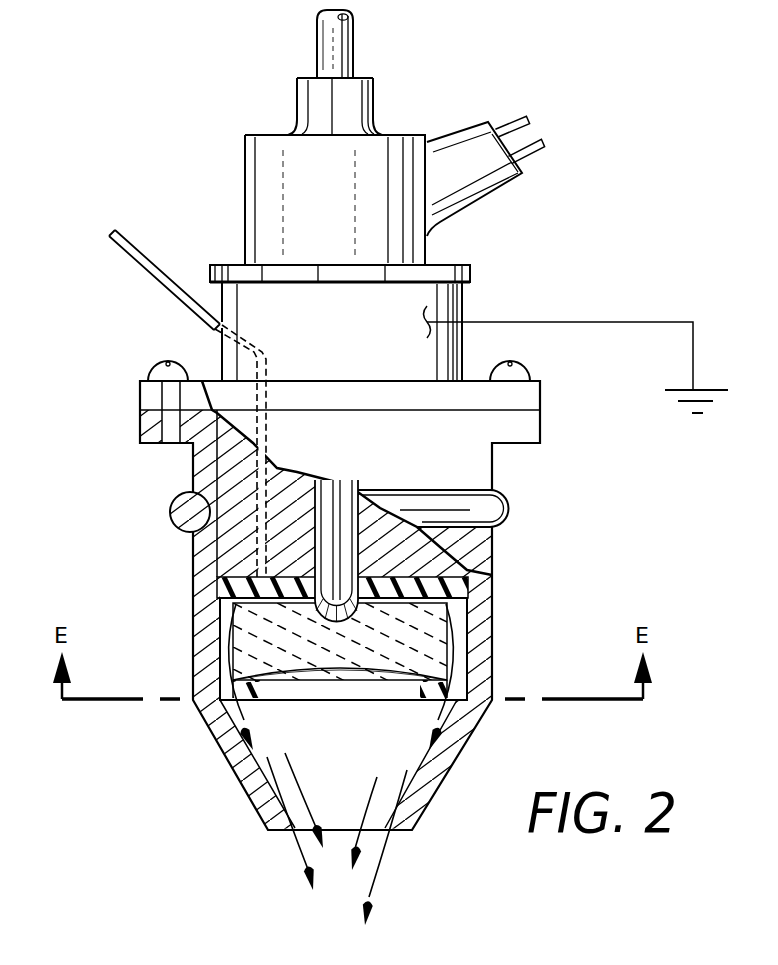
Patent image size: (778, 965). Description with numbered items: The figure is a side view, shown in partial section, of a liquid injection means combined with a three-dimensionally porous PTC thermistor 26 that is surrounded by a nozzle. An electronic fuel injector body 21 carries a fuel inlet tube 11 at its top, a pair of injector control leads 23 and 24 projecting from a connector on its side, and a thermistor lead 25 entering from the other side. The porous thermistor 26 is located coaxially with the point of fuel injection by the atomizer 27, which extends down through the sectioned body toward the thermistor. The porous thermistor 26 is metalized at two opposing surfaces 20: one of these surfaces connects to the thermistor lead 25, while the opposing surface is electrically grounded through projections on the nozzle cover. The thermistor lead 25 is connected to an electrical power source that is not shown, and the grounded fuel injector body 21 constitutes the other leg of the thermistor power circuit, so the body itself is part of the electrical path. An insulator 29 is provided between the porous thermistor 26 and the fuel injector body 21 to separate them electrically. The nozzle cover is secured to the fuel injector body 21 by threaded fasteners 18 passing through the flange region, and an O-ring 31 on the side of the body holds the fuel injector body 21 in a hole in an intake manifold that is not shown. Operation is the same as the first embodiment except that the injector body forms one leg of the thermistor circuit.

The fuel inlet tube 11 is at (355, 36).
The threaded fasteners 18 is at (153, 378).
The metalized opposing surfaces 20 is at (426, 575).
The electronic fuel injector body 21 is at (458, 266).
The injector control lead 23 is at (531, 118).
The injector control lead 24 is at (546, 146).
The thermistor lead 25 is at (127, 255).
The 3-dimensionally porous PTC thermistor 26 is at (487, 619).
The atomizer 27 is at (343, 481).
The insulator 29 is at (228, 580).
The O-ring 31 is at (178, 503).